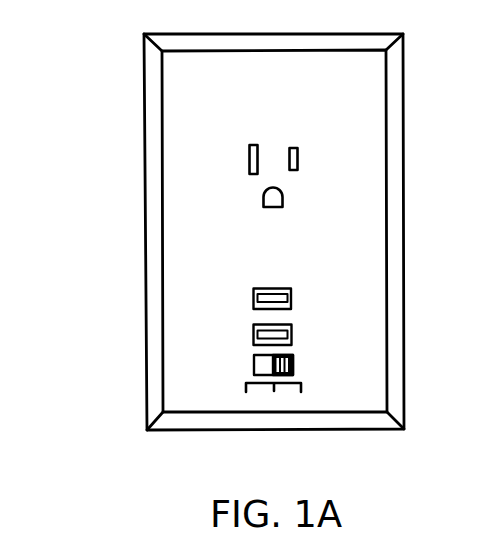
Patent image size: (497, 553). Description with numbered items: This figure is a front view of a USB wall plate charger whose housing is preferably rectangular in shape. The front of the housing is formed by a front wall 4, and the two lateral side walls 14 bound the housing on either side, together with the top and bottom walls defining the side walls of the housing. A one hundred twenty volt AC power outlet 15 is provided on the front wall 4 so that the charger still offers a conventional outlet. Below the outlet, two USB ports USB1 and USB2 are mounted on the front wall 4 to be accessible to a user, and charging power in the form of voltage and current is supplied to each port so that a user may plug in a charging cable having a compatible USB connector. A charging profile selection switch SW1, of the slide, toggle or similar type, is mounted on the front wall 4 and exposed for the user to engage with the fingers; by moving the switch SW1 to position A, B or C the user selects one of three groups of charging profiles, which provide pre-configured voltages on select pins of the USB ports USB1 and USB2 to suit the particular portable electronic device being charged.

The front wall 4 is at (178, 260).
The lateral side walls 14 is at (145, 198).
The 120 volt AC power outlet 15 is at (249, 160).
The USB port USB1 is at (253, 297).
The USB port USB2 is at (253, 334).
The charging profile selection switch SW1 is at (254, 363).